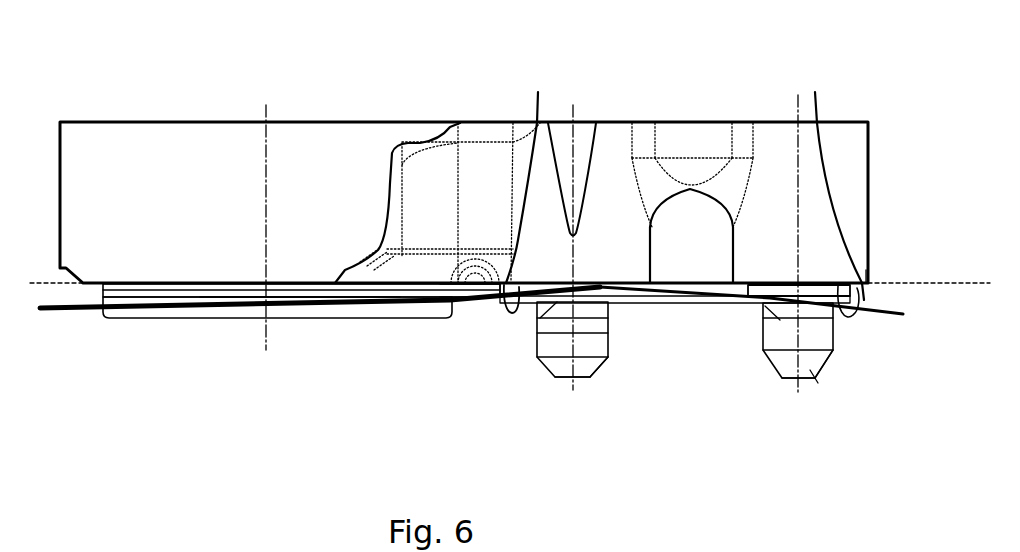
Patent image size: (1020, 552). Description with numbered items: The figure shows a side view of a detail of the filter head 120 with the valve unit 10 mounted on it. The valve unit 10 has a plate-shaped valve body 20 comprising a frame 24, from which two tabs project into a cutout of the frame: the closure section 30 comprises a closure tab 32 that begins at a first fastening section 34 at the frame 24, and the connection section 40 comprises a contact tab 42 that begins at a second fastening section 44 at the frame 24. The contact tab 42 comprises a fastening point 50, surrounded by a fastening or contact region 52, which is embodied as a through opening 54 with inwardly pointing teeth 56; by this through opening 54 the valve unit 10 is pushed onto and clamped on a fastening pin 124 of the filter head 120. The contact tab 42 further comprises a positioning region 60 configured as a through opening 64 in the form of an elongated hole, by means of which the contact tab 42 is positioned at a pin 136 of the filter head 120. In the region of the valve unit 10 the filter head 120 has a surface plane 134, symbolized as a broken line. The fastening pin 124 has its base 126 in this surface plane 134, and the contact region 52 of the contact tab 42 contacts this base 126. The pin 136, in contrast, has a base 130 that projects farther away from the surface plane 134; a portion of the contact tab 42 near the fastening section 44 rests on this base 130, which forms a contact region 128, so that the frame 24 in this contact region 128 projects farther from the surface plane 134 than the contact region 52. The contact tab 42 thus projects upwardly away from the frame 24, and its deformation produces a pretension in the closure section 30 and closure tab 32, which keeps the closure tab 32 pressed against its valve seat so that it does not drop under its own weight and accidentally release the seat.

The valve unit 10 is at (293, 324).
The valve body 20 is at (125, 318).
The frame 24 is at (490, 306).
The closure section 30 is at (202, 276).
The closure tab 32 is at (432, 320).
The first fastening section 34 is at (72, 313).
The connection section 40 is at (786, 282).
The contact tab 42 is at (704, 303).
The second fastening section 44 is at (852, 318).
The fastening point 50 is at (535, 376).
The contact region 52 is at (543, 320).
The through opening 54 is at (612, 306).
The teeth 56 is at (598, 283).
The positioning region 60 is at (756, 308).
The through opening 64 is at (788, 306).
The filter head 120 is at (178, 118).
The fastening pin 124 is at (580, 373).
The base 126 is at (541, 168).
The contact region 128 is at (830, 398).
The base 130 is at (819, 177).
The surface plane 134 is at (866, 283).
The pin 136 is at (812, 363).